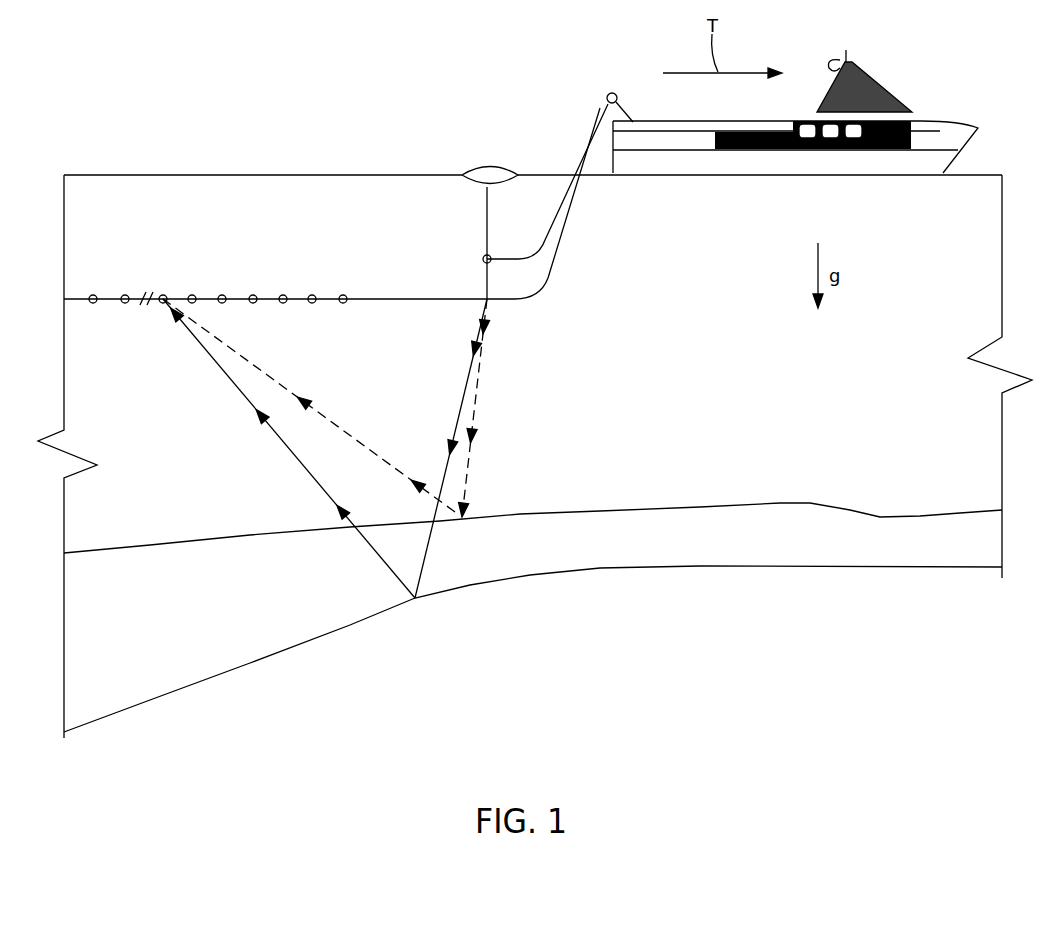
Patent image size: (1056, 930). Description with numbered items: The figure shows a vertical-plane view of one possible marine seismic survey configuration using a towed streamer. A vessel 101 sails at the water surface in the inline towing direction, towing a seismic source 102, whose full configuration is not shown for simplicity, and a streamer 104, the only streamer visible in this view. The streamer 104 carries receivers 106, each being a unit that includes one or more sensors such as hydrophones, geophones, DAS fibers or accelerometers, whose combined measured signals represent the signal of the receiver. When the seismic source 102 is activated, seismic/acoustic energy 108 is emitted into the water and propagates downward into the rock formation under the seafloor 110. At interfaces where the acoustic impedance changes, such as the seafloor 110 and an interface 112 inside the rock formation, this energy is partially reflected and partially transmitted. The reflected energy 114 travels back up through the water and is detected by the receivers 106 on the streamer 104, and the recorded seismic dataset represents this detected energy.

The vessel 101 is at (950, 121).
The seismic source 102 is at (483, 259).
The streamer 104 is at (110, 297).
The receivers 106 is at (163, 295).
The seismic/acoustic energy 108 is at (466, 385).
The seafloor 110 is at (775, 504).
The interface 112 is at (832, 568).
The reflected energy 114 is at (278, 437).